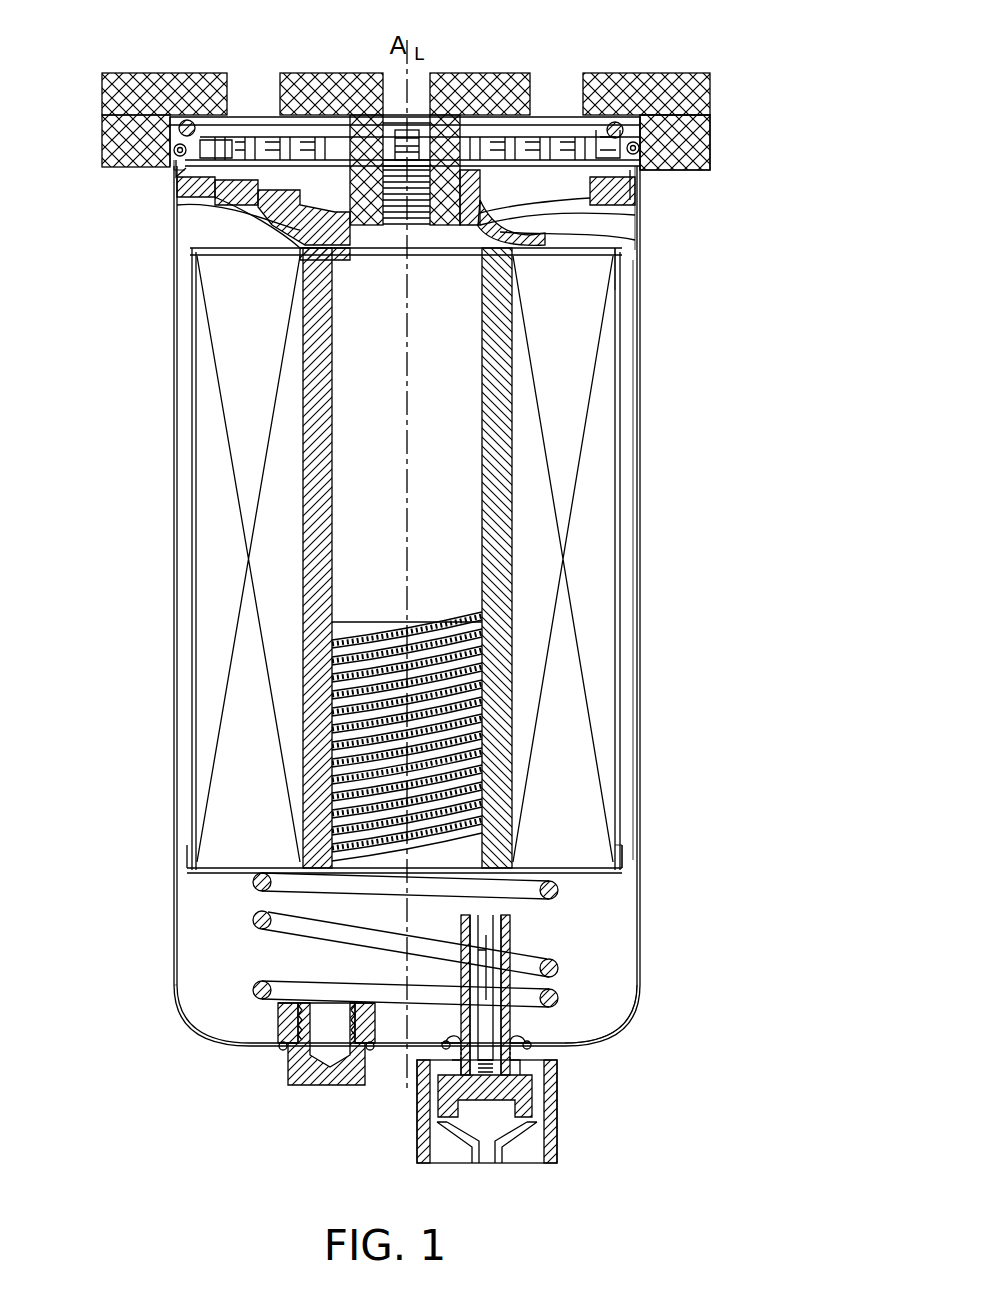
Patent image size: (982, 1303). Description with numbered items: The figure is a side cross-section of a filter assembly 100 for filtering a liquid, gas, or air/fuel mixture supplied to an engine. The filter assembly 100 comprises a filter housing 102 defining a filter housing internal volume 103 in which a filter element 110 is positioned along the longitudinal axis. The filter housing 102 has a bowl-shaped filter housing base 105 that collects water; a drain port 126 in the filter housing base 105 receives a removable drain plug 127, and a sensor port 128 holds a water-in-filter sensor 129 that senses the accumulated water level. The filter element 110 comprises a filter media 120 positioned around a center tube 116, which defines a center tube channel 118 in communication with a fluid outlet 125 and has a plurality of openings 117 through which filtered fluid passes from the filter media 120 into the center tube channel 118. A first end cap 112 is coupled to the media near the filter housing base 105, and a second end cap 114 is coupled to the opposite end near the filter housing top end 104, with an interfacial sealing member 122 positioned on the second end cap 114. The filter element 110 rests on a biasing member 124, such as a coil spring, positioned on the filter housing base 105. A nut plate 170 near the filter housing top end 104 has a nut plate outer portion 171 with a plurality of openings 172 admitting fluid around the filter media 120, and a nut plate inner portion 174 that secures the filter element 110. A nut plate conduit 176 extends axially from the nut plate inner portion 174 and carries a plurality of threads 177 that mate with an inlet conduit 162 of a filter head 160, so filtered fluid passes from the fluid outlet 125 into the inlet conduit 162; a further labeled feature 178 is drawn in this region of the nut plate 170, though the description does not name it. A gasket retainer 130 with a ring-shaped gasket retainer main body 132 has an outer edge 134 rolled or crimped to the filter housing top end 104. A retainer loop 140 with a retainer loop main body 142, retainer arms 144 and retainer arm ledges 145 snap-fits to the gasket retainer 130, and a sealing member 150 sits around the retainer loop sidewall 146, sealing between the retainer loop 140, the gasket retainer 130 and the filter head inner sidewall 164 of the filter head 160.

The filter assembly 100 is at (748, 290).
The filter housing 102 is at (641, 468).
The filter housing internal volume 103 is at (628, 617).
The filter housing top end 104 is at (638, 246).
The filter housing base 105 is at (643, 990).
The filter element 110 is at (621, 415).
The first end cap 112 is at (624, 853).
The second end cap 114 is at (618, 258).
The center tube 116 is at (486, 737).
The plurality of openings 117 is at (480, 700).
The center tube channel 118 is at (502, 762).
The filter media 120 is at (600, 525).
The interfacial sealing member 122 is at (547, 232).
The biasing member 124 is at (255, 914).
The fluid outlet 125 is at (336, 272).
The drain port 126 is at (278, 1022).
The drain plug 127 is at (308, 1068).
The sensor port 128 is at (513, 1050).
The water-in-filter sensor 129 is at (484, 1040).
The gasket retainer 130 is at (173, 177).
The gasket retainer main body 132 is at (172, 160).
The outer edge 134 is at (215, 130).
The retainer loop 140 is at (417, 113).
The retainer loop main body 142 is at (330, 127).
The retainer arms 144 is at (224, 137).
The retainer arm ledge 145 is at (222, 132).
The retainer loop sidewall 146 is at (190, 126).
The sealing member 150 is at (178, 142).
The filter head 160 is at (521, 68).
The inlet conduit 162 is at (462, 205).
The filter head inner sidewall 164 is at (700, 150).
The nut plate 170 is at (642, 186).
The nut plate outer portion 171 is at (612, 196).
The plurality of openings 172 is at (233, 194).
The nut plate inner portion 174 is at (535, 228).
The nut plate conduit 176 is at (264, 231).
The plurality of threads 177 is at (305, 240).
The end cap hub 178 is at (482, 236).